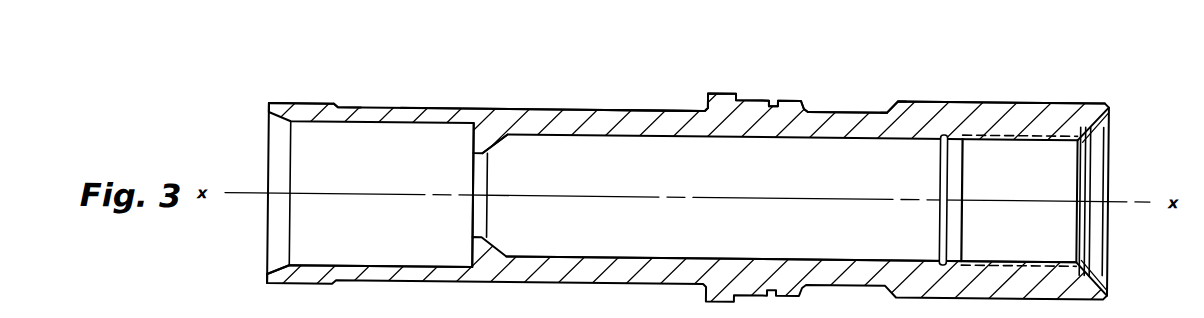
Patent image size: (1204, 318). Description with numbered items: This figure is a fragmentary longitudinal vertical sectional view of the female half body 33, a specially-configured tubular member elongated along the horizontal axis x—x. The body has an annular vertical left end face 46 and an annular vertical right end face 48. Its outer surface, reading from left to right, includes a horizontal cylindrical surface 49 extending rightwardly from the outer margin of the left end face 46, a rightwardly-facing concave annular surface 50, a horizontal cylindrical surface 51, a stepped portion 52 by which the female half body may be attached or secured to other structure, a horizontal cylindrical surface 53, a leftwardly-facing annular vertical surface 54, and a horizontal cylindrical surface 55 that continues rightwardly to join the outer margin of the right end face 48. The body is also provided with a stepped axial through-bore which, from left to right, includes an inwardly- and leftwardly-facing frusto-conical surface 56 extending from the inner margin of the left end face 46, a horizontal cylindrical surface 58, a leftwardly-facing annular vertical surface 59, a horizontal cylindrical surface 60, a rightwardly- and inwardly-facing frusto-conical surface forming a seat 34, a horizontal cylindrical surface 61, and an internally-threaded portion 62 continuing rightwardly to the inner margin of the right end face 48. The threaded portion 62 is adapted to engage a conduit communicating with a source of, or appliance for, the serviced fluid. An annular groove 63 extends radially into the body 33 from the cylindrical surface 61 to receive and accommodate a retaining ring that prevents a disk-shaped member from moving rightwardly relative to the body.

The female half body 33 is at (671, 62).
The seat 34 is at (524, 158).
The left end face 46 is at (225, 192).
The right end face 48 is at (1147, 202).
The horizontal cylindrical surface 49 is at (290, 78).
The rightwardly-facing concave annular surface 50 is at (366, 80).
The horizontal cylindrical surface 51 is at (551, 82).
The stepped portion 52 is at (761, 73).
The horizontal cylindrical surface 53 is at (849, 85).
The leftwardly-facing annular vertical surface 54 is at (917, 82).
The horizontal cylindrical surface 55 is at (1001, 80).
The frusto-conical surface 56 is at (253, 244).
The horizontal cylindrical surface 58 is at (380, 241).
The leftwardly-facing annular vertical surface 59 is at (421, 194).
The horizontal cylindrical surface 60 is at (511, 195).
The horizontal cylindrical surface 61 is at (791, 235).
The internally-threaded portion 62 is at (1019, 200).
The annular groove 63 is at (904, 199).